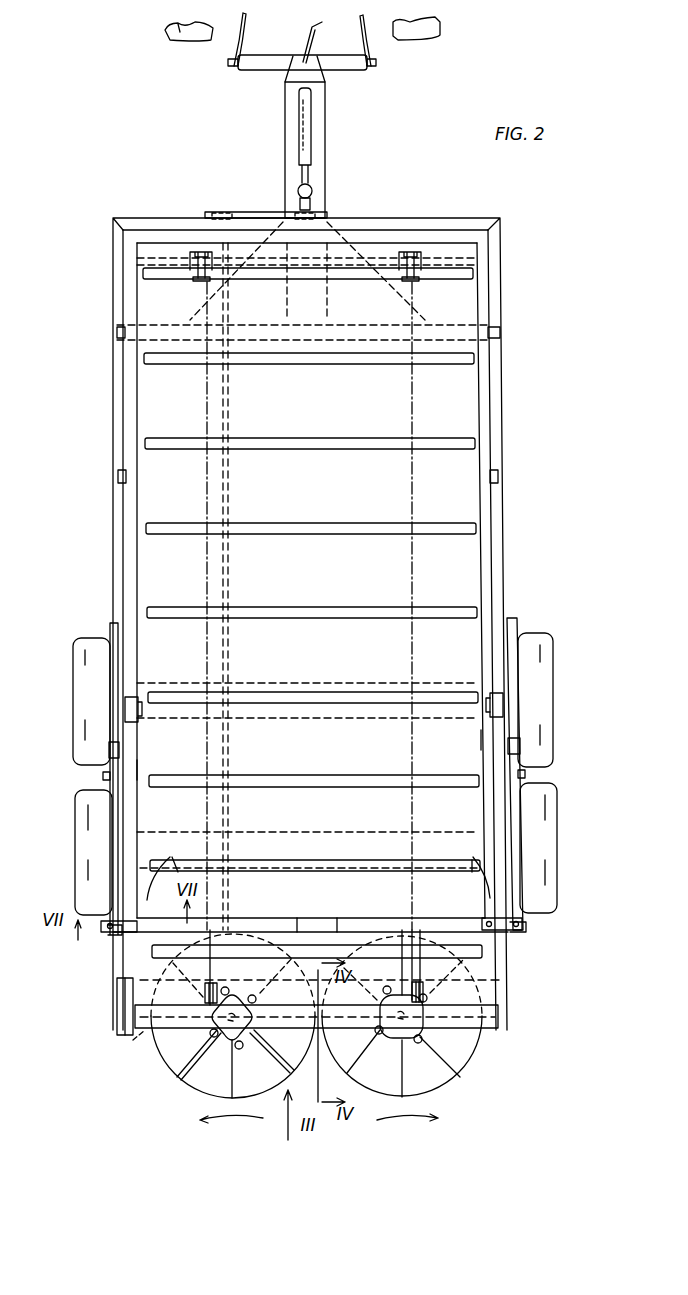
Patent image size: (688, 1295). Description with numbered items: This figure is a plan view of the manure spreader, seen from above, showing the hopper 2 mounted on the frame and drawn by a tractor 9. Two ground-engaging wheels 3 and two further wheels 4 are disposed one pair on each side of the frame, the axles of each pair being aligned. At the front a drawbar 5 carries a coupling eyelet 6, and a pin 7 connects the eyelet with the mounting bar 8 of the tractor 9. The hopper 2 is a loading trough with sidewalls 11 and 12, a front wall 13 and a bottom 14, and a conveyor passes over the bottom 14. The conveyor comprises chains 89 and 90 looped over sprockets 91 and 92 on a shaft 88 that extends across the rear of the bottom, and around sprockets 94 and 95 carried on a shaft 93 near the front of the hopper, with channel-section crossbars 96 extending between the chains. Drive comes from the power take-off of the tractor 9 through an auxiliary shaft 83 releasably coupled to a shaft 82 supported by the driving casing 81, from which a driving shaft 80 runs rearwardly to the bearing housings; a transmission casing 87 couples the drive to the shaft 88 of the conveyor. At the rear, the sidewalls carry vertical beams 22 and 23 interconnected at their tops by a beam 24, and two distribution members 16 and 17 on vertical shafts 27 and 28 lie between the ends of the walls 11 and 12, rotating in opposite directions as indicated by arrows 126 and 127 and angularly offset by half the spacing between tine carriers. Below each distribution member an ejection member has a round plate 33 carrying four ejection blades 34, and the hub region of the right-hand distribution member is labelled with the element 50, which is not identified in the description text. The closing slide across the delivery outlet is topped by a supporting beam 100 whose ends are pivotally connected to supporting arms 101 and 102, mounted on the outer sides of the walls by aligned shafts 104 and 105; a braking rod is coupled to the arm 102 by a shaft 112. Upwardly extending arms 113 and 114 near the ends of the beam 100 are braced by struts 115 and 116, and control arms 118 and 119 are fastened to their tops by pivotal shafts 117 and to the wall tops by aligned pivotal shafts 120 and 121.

The hopper 2 is at (515, 325).
The wheels 3 is at (548, 660).
The wheels 4 is at (75, 818).
The drawbar 5 is at (318, 125).
The coupling eyelet 6 is at (318, 74).
The pin 7 is at (313, 31).
The mounting bar 8 is at (263, 62).
The tractor 9 is at (165, 46).
The sidewall 11 is at (517, 472).
The sidewall 12 is at (104, 450).
The front wall 13 is at (159, 211).
The bottom 14 is at (155, 502).
The distribution member 16 is at (461, 1066).
The distribution member 17 is at (223, 1079).
The vertical beam 22 is at (508, 1017).
The vertical beam 23 is at (133, 1040).
The beam 24 is at (178, 1027).
The vertical shaft 27 is at (432, 1045).
The vertical shaft 28 is at (229, 1027).
The round plate 33 is at (447, 1080).
The ejection blades 34 is at (445, 1057).
The right wheel hub 50 is at (373, 1050).
The driving shaft 80 is at (230, 487).
The driving casing 81 is at (245, 212).
The shaft 82 is at (312, 196).
The auxiliary shaft 83 is at (299, 100).
The transmission casing 87 is at (117, 992).
The shaft 88 is at (505, 982).
The chain 89 is at (413, 500).
The chain 90 is at (206, 580).
The sprocket 91 is at (412, 985).
The sprocket 92 is at (220, 985).
The shaft 93 is at (278, 282).
The sprocket 94 is at (416, 280).
The sprocket 95 is at (199, 282).
The crossbars 96 is at (320, 783).
The supporting beam 100 is at (325, 917).
The supporting arm 101 is at (522, 745).
The supporting arm 102 is at (112, 750).
The shaft 104 is at (517, 620).
The shaft 105 is at (112, 625).
The shaft 112 is at (104, 776).
The arm 113 is at (470, 862).
The arm 114 is at (175, 862).
The strut 115 is at (440, 917).
The strut 116 is at (262, 917).
The pivotal shafts 117 is at (523, 931).
The control arm 118 is at (493, 738).
The control arm 119 is at (140, 770).
The pivotal shaft 120 is at (505, 705).
The pivotal shaft 121 is at (125, 710).
The arrow 126 is at (418, 1125).
The arrow 127 is at (248, 1125).